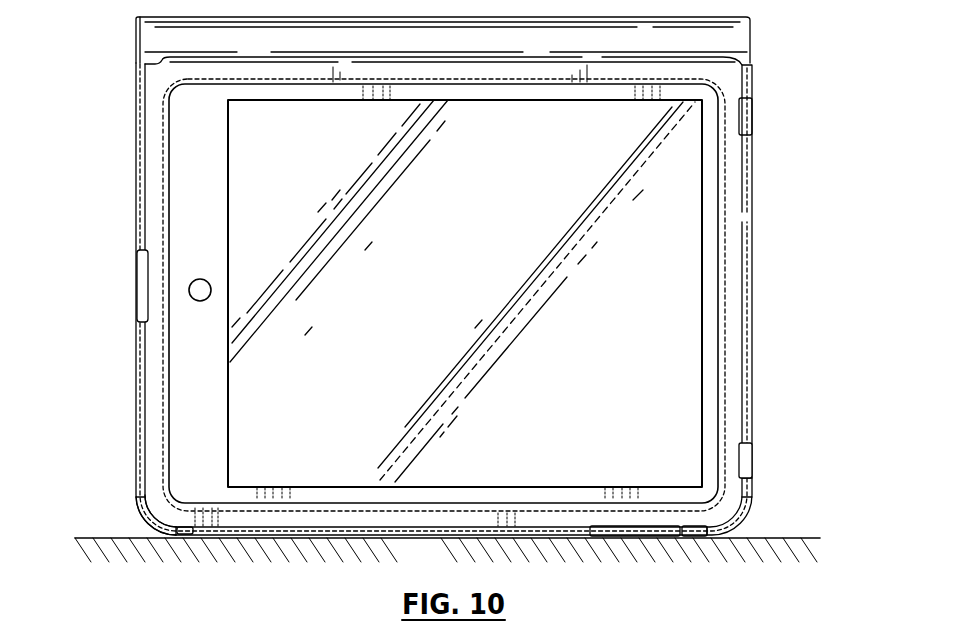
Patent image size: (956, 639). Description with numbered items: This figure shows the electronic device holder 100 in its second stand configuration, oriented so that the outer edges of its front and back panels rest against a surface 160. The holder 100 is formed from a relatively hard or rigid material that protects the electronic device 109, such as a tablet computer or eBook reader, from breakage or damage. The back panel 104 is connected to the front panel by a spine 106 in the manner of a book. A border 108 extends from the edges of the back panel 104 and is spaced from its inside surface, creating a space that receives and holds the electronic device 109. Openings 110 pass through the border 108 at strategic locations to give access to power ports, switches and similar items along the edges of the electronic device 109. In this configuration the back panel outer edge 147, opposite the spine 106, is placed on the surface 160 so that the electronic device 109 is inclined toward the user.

The electronic device holder 100 is at (756, 219).
The back panel 104 is at (139, 341).
The spine 106 is at (155, 42).
The border 108 is at (162, 437).
The electronic device 109 is at (687, 373).
The openings 110 is at (745, 465).
The outer edge 147 is at (322, 538).
The surface 160 is at (435, 568).